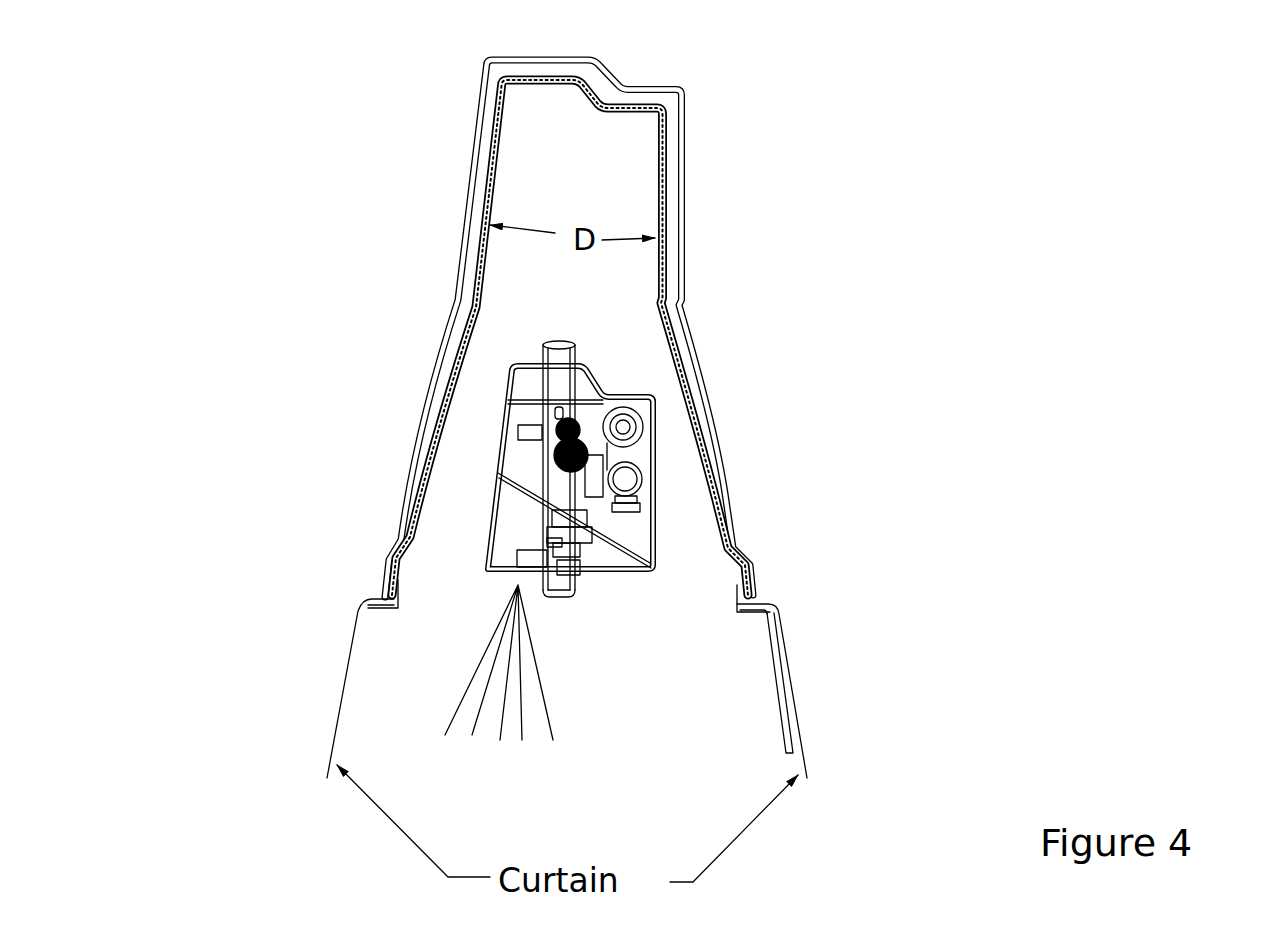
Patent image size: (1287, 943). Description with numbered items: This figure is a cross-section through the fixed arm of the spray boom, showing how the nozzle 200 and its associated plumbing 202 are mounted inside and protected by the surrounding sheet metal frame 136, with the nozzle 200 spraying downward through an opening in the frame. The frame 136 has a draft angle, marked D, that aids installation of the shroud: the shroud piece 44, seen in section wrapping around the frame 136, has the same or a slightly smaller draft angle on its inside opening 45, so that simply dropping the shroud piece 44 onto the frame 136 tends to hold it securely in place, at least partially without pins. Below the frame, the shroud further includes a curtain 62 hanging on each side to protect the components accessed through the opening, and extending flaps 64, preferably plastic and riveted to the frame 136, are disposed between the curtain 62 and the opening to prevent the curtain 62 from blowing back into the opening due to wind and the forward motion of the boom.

The shroud piece 44 is at (688, 226).
The inside opening 45 is at (563, 85).
The sheet metal frame 136 is at (660, 428).
The plumbing 202 is at (655, 482).
The nozzle 200 is at (528, 558).
The curtain 62 is at (342, 680).
The extending flaps 64 is at (772, 673).